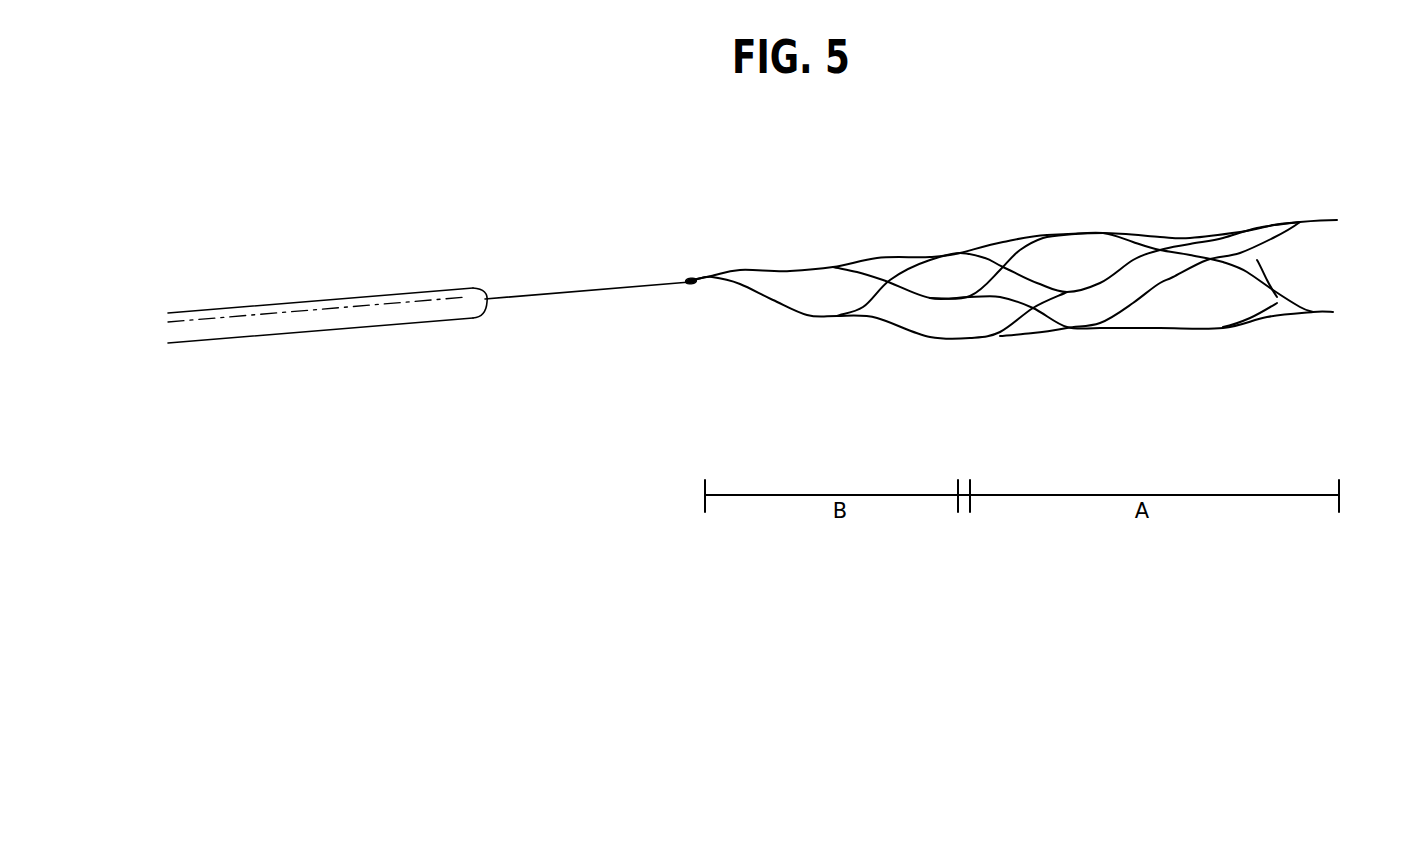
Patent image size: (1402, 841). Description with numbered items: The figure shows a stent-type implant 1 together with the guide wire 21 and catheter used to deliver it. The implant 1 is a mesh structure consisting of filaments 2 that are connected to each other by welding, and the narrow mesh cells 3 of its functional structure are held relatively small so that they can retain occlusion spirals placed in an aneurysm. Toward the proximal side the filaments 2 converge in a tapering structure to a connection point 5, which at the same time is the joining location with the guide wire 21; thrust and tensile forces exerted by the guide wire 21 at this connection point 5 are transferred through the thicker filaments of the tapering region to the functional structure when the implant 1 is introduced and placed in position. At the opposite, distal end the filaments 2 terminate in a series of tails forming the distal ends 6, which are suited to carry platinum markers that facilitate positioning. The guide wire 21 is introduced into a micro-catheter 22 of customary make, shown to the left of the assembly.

The implant 1 is at (1036, 301).
The filaments 2 is at (1070, 235).
The mesh cells 3 is at (1173, 302).
The connection point 5 is at (698, 277).
The distal ends 6 is at (1337, 220).
The guide wire 21 is at (567, 290).
The micro-catheter 22 is at (333, 298).